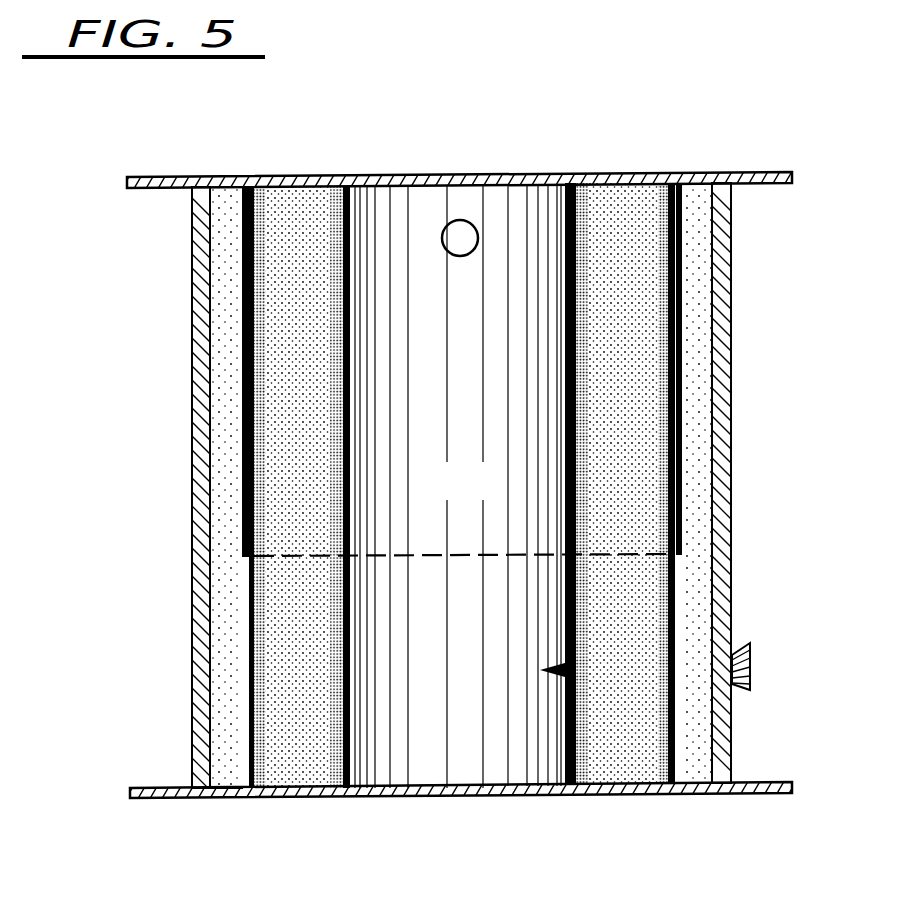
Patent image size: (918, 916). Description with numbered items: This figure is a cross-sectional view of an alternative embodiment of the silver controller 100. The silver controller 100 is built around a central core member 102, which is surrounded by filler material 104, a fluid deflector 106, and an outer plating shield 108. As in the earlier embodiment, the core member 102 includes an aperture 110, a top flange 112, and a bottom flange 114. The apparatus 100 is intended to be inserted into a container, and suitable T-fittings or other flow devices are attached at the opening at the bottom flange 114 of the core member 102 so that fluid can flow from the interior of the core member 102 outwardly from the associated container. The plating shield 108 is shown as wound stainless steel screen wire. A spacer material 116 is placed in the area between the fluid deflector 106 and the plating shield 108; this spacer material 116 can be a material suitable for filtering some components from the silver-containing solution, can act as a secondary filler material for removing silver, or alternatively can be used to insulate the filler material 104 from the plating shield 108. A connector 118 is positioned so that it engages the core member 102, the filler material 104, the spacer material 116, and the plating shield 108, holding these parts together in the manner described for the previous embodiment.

The silver controller 100 is at (677, 156).
The core member 102 is at (485, 493).
The filler material 104 is at (638, 468).
The fluid deflector 106 is at (252, 560).
The plating shield 108 is at (193, 404).
The aperture 110 is at (462, 236).
The top flange 112 is at (253, 180).
The bottom flange 114 is at (445, 178).
The spacer material 116 is at (228, 797).
The connector 118 is at (752, 668).